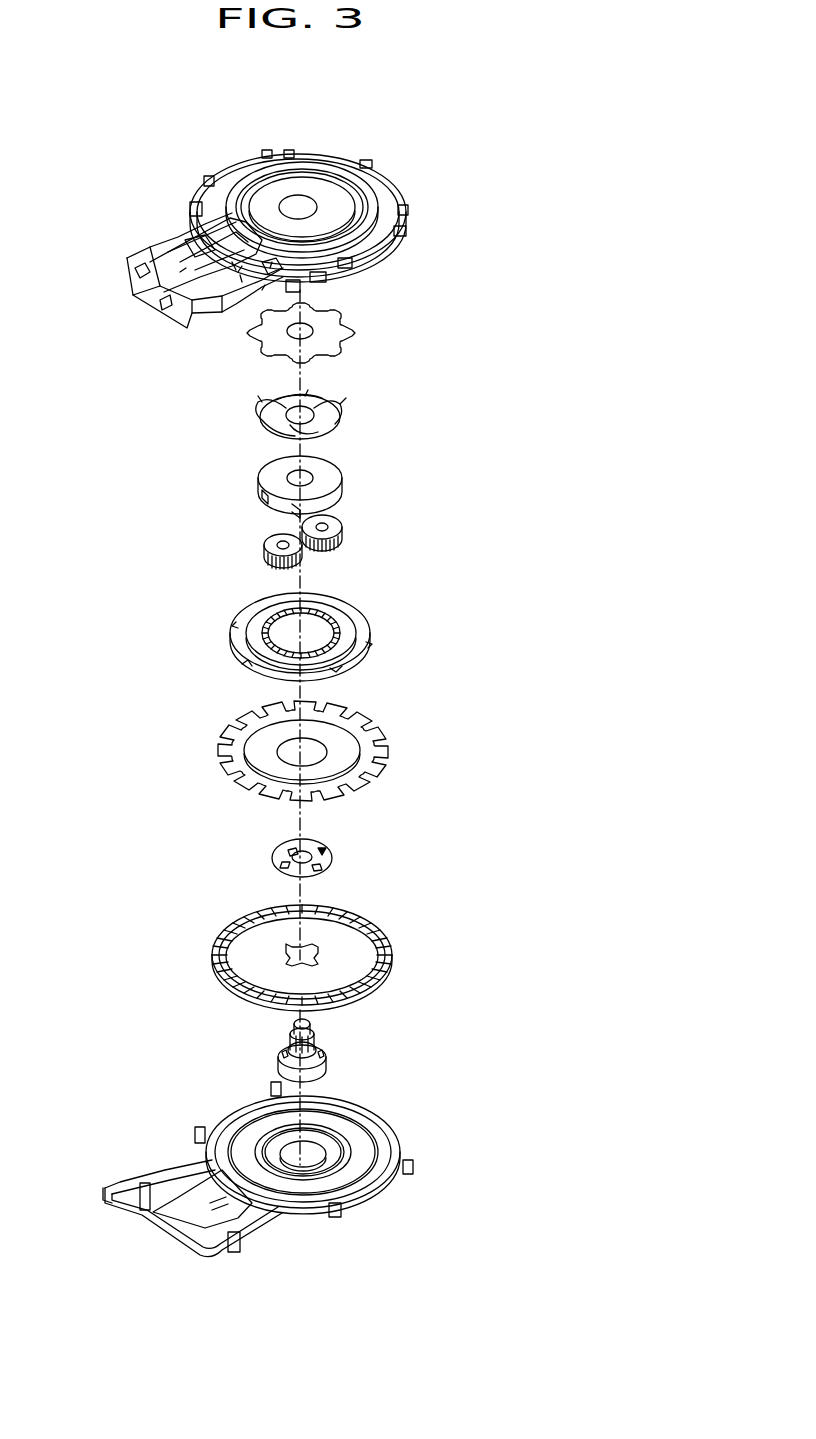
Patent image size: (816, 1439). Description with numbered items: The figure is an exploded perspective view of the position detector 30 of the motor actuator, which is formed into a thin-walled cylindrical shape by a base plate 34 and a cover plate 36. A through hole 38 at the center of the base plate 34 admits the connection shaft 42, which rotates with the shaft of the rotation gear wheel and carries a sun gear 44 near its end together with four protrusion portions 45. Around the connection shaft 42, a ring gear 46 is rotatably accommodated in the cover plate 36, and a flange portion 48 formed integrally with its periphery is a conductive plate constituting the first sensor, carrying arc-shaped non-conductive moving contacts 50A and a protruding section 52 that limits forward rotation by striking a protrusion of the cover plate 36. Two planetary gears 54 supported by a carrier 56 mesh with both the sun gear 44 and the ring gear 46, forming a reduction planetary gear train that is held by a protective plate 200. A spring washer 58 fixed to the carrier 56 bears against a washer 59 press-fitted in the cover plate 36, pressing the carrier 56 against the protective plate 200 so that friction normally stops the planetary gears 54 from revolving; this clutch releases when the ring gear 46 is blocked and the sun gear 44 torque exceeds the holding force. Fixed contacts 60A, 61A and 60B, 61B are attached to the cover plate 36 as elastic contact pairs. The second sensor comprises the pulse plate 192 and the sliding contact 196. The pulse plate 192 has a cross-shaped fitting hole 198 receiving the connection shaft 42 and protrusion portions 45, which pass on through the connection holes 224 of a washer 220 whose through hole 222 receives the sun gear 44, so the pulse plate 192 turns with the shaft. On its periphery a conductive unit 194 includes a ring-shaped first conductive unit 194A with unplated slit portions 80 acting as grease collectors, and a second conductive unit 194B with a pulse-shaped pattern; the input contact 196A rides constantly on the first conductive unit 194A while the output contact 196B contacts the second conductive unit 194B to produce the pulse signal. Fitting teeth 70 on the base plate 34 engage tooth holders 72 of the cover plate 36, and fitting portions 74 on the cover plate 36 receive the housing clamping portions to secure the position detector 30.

The position detector 30 is at (118, 448).
The base plate 34 is at (282, 1169).
The cover plate 36 is at (289, 255).
The through hole 38 is at (303, 1166).
The connection shaft 42 is at (311, 1039).
The sun gear 44 is at (294, 1030).
The protrusion portions 45 is at (322, 1043).
The ring gear 46 is at (345, 630).
The flange portion 48 is at (352, 657).
The moving contact 50A is at (163, 678).
The protruding section 52 is at (264, 639).
The planetary gears 54 is at (345, 532).
The carrier 56 is at (345, 480).
The spring washer 58 is at (345, 414).
The washer 59 is at (350, 330).
The fixed contact 60A is at (240, 275).
The fixed contact 60B is at (232, 262).
The fixed contact 61A is at (265, 285).
The fixed contact 61B is at (272, 262).
The fitting teeth 70 is at (268, 1088).
The tooth holders 72 is at (200, 190).
The fitting portions 74 is at (190, 210).
The slit portions 80 is at (215, 990).
The pulse plate 192 is at (266, 959).
The conductive unit 194 is at (222, 953).
The first conductive unit 194A is at (225, 925).
The second conductive unit 194B is at (220, 956).
The sliding contact 196 is at (233, 362).
The input contact 196A is at (180, 272).
The output contact 196B is at (238, 272).
The fitting hole 198 is at (320, 960).
The protective plate 200 is at (390, 746).
The washer 220 is at (306, 853).
The through hole 222 is at (292, 852).
The connection holes 224 is at (322, 850).